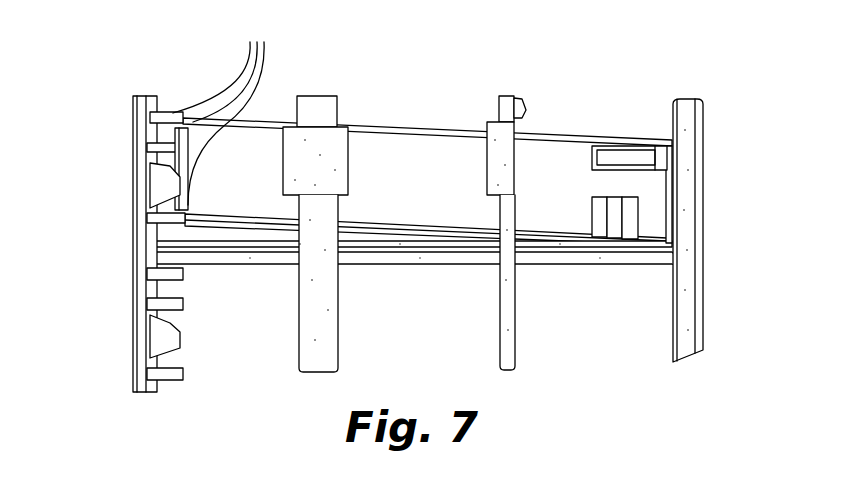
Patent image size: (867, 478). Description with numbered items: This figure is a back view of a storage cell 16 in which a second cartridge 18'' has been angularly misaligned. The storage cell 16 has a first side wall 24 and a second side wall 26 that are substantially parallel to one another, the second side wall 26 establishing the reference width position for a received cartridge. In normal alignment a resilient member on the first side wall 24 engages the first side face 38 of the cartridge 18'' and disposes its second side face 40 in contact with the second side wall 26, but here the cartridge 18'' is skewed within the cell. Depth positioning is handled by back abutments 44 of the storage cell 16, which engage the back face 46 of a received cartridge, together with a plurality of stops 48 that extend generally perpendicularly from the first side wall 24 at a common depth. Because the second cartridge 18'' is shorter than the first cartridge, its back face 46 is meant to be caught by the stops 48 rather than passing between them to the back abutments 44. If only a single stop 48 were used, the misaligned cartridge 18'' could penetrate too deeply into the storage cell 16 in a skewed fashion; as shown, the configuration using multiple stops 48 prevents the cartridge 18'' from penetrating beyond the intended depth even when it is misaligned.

The storage cell 16 is at (624, 113).
The second cartridge 18'' is at (427, 84).
The first side wall 24 is at (162, 106).
The second side wall 26 is at (672, 120).
The first side face 38 is at (153, 164).
The second side face 40 is at (676, 212).
The back abutment 44 is at (322, 96).
The back face 46 is at (412, 233).
The stop 48 is at (224, 113).